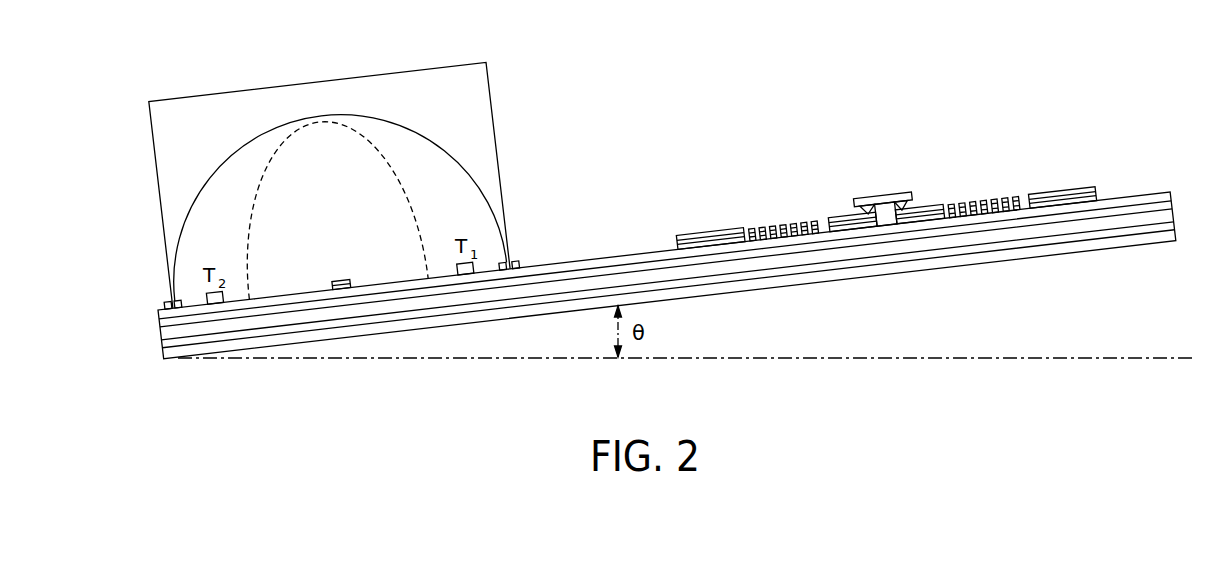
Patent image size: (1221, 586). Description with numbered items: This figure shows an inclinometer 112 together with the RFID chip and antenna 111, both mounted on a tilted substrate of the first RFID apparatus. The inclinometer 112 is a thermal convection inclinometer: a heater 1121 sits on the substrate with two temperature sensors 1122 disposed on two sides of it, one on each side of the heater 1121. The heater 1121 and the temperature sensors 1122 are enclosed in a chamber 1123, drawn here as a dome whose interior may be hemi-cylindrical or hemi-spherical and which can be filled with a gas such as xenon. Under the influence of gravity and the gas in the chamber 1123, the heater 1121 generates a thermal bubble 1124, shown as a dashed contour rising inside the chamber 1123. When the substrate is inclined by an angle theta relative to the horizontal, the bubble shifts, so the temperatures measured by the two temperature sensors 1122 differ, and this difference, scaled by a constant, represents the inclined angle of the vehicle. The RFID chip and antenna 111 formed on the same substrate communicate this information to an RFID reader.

The RFID chip and antenna 111 is at (916, 172).
The inclinometer 112 is at (150, 79).
The heater 1121 is at (366, 270).
The temperature sensors 1122 is at (491, 244).
The chamber 1123 is at (425, 170).
The thermal bubble 1124 is at (330, 137).